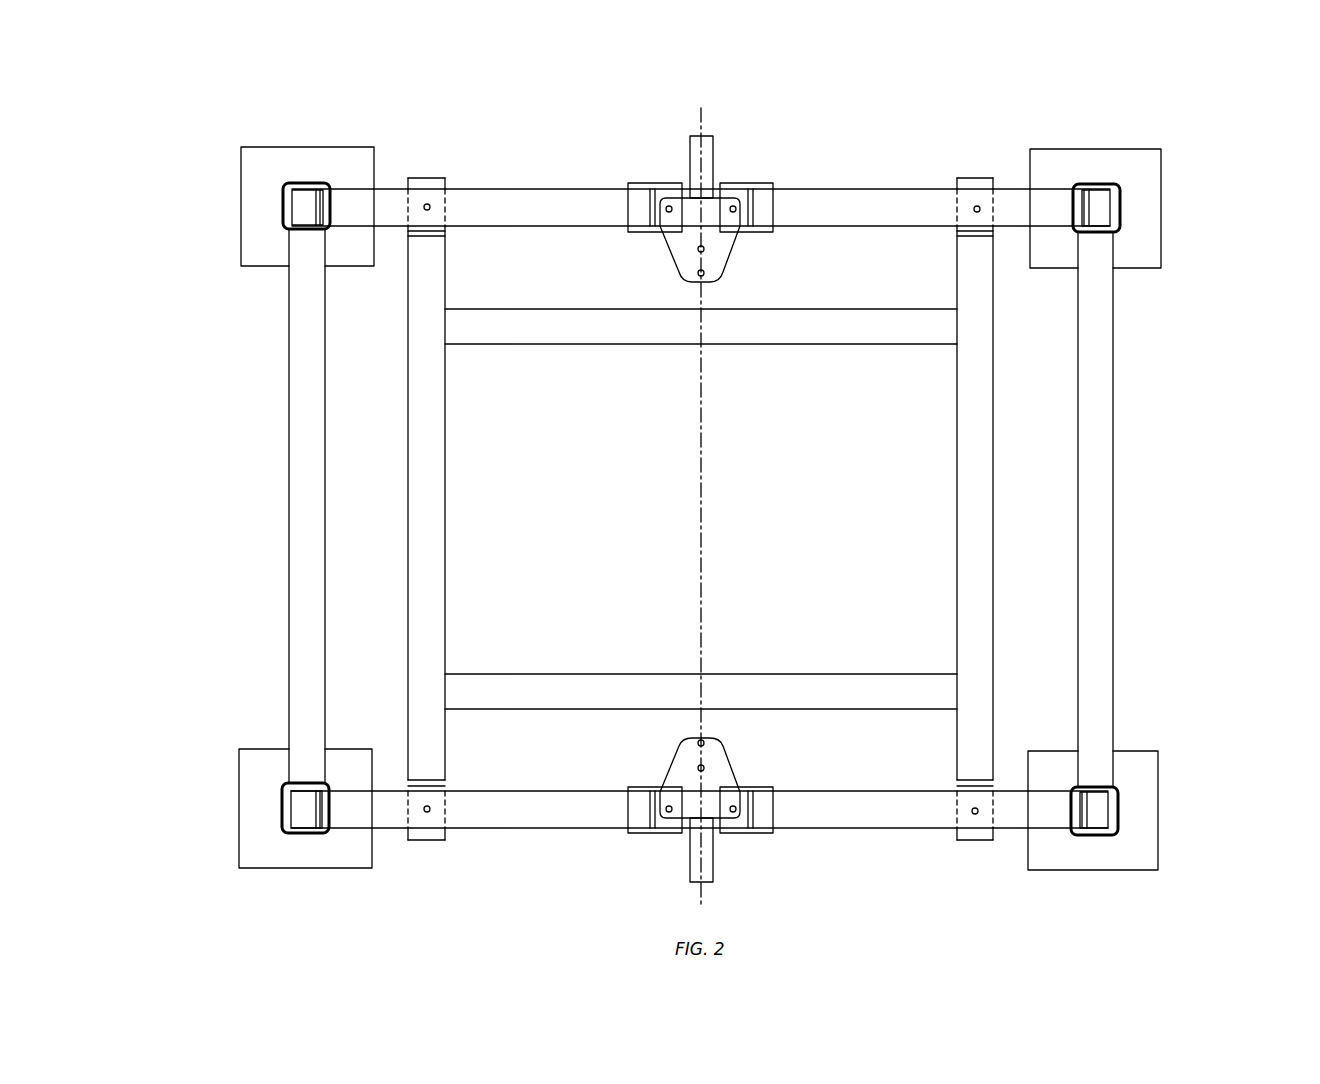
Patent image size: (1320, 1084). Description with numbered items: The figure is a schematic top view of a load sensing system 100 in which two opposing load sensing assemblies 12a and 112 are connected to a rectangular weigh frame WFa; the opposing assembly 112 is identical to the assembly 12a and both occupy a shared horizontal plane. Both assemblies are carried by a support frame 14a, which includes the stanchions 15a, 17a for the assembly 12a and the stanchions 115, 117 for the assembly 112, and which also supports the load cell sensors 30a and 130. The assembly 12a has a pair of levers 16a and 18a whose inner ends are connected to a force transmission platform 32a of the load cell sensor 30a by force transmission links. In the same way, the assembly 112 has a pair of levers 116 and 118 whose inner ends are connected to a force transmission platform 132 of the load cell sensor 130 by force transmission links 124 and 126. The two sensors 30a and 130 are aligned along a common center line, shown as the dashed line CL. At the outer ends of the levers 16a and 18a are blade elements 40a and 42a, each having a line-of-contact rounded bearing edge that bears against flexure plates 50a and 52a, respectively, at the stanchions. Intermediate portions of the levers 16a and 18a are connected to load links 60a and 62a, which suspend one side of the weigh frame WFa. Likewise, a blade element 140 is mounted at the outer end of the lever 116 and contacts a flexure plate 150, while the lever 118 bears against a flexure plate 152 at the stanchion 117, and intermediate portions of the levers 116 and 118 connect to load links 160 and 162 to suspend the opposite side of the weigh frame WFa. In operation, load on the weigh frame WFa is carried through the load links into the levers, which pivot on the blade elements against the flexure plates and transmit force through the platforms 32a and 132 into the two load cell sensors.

The load sensing system 100 is at (387, 82).
The opposing load sensing assembly 112 is at (383, 131).
The load sensing assembly 12a is at (254, 435).
The stanchion 115 is at (236, 221).
The flexure plate 150 is at (304, 211).
The blade element 140 is at (324, 216).
The load link 160 is at (432, 204).
The lever 116 is at (546, 220).
The lever 118 is at (868, 220).
The load cell sensor 130 is at (671, 158).
The force transmission link 124 is at (677, 196).
The force transmission link 126 is at (778, 180).
The force transmission platform 132 is at (730, 190).
The support frame 14a is at (707, 133).
The load link 162 is at (974, 205).
The flexure plate 152 is at (1102, 207).
The stanchion 117 is at (1164, 233).
The center line CL is at (703, 496).
The rectangular weigh frame WFa is at (997, 530).
The stanchion 15a is at (236, 801).
The flexure plate 50a is at (302, 815).
The blade element 40a is at (325, 822).
The load link 60a is at (430, 813).
The lever 16a is at (543, 822).
The lever 18a is at (868, 822).
The load cell sensor 30a is at (660, 843).
The force transmission platform 32a is at (724, 819).
The load link 62a is at (971, 815).
The blade element 42a is at (1074, 819).
The flexure plate 52a is at (1110, 815).
The stanchion 17a is at (1164, 799).